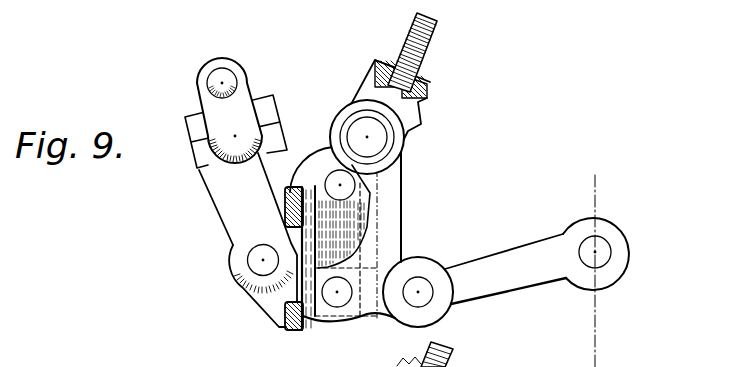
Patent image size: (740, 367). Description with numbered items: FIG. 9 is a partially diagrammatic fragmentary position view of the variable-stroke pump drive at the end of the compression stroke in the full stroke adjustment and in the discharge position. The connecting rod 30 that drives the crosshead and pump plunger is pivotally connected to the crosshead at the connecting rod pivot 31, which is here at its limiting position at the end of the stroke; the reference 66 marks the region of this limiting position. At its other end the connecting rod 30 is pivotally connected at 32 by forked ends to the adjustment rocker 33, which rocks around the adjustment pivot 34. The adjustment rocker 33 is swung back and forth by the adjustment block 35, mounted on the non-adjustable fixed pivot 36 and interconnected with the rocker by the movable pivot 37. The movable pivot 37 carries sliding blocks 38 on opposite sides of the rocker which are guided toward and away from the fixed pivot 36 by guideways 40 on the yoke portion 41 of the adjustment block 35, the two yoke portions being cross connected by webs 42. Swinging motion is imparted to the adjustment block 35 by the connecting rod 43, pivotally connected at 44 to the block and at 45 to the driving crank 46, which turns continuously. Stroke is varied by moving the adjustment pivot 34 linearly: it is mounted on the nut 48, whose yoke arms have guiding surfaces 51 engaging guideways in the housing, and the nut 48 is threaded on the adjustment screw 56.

The connecting rod 30 is at (513, 257).
The connecting rod pivot 31 is at (607, 260).
The pivotal connection 32 is at (423, 277).
The adjustment rocker 33 is at (400, 227).
The adjustment pivot 34 is at (340, 147).
The adjustment block 35 is at (228, 250).
The fixed pivot 36 is at (353, 183).
The movable pivot 37 is at (340, 307).
The sliding blocks 38 is at (350, 323).
The guideways 40 is at (363, 213).
The yoke portion 41 is at (307, 330).
The webs 42 is at (283, 322).
The connecting rod 43 is at (230, 196).
The pivotal connection 44 is at (257, 270).
The pivotal connection 45 is at (205, 148).
The driving crank 46 is at (247, 102).
The nut 48 is at (422, 90).
The guiding surfaces 51 is at (413, 125).
The adjustment screw 56 is at (428, 53).
The center line 66 is at (597, 202).